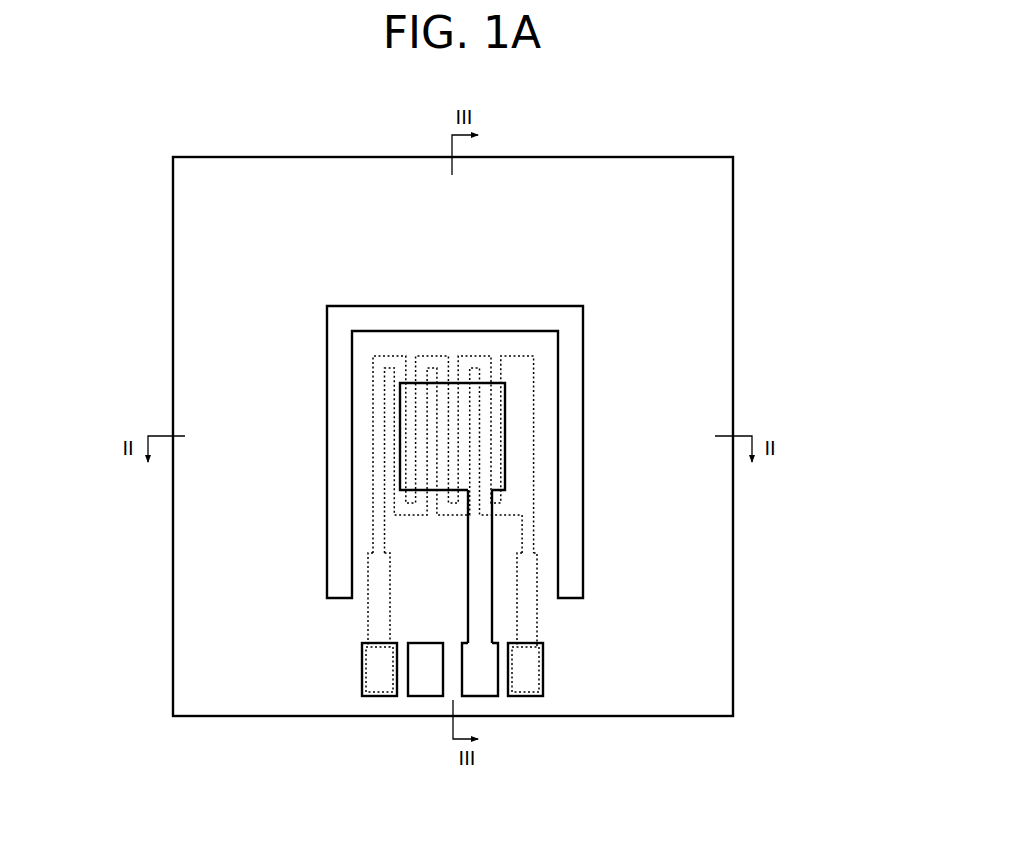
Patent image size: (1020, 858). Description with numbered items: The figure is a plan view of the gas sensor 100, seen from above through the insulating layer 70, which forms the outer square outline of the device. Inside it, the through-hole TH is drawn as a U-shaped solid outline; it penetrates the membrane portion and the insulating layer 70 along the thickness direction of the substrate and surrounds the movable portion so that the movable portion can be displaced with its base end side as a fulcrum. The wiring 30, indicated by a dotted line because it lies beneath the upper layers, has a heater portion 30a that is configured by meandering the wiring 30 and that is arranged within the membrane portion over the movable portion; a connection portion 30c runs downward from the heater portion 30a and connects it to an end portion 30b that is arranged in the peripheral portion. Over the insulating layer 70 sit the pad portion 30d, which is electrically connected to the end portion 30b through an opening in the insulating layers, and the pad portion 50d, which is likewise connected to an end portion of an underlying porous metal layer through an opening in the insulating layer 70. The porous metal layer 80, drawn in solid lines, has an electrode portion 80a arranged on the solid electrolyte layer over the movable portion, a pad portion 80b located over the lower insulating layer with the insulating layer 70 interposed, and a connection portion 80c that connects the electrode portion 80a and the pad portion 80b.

The gas sensor 100 is at (771, 105).
The insulating layer 70 is at (373, 174).
The through-hole TH is at (517, 312).
The wiring 30 is at (74, 392).
The heater portion 30a is at (378, 402).
The end portion 30b is at (380, 662).
The connection portion 30c is at (380, 576).
The pad portion 30d is at (365, 697).
The pad portion 50d is at (412, 697).
The porous metal layer 80 is at (844, 358).
The electrode portion 80a is at (493, 387).
The pad portion 80b is at (485, 665).
The connection portion 80c is at (485, 560).